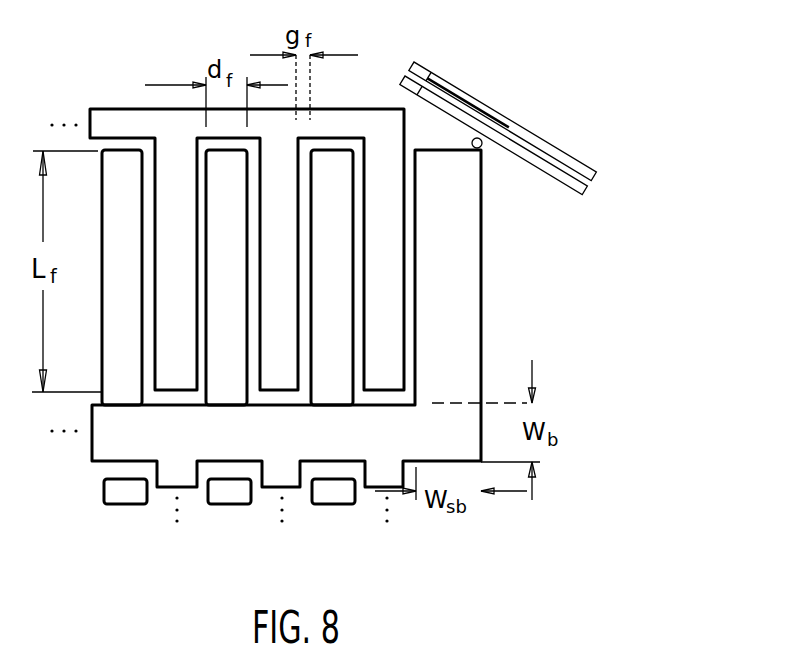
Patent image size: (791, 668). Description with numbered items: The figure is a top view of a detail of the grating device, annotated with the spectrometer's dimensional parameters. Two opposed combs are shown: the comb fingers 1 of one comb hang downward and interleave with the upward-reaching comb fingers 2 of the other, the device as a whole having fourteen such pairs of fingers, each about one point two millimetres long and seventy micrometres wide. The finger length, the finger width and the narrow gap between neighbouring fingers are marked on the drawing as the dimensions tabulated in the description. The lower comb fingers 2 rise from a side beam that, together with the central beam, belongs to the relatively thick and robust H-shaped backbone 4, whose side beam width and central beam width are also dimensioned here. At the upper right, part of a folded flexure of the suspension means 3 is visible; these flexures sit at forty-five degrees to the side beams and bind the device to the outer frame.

The comb fingers 1 is at (405, 152).
The comb fingers 2 is at (102, 242).
The suspension means 3 is at (541, 138).
The H-shaped backbone 4 is at (482, 378).